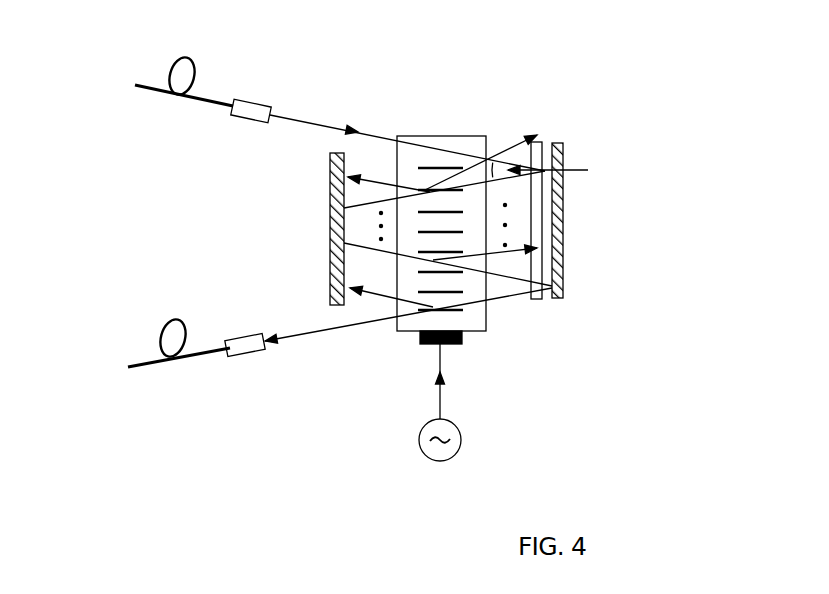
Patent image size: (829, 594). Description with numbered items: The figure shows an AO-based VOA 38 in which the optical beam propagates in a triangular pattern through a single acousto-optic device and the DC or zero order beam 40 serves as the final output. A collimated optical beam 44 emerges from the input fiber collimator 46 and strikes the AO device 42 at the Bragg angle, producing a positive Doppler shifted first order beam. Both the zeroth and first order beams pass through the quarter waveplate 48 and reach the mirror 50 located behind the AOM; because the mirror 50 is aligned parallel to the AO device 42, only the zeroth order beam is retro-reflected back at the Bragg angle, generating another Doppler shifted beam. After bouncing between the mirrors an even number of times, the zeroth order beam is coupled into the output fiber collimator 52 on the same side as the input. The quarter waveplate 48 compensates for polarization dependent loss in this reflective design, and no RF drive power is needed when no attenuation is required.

The AO-based VOA 38 is at (500, 72).
The DC or zero order beam 40 is at (317, 331).
The AO device 42 is at (468, 324).
The collimated optical beam 44 is at (307, 121).
The input fiber collimator 46 is at (211, 101).
The quarter waveplate 48 is at (540, 147).
The mirror 50 is at (565, 273).
The output fiber collimator 52 is at (200, 354).